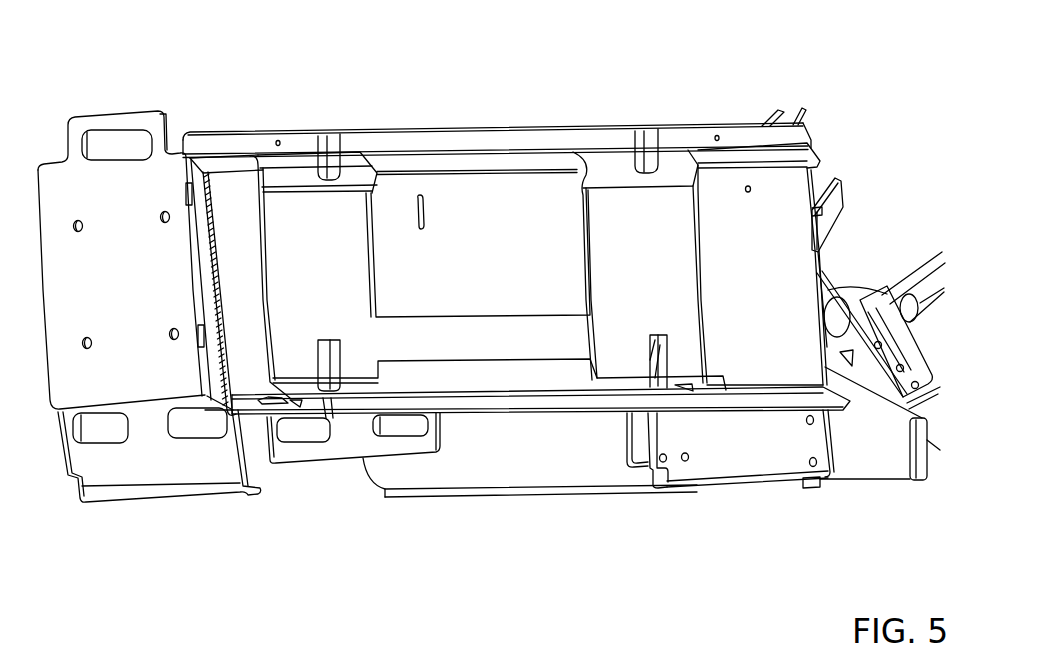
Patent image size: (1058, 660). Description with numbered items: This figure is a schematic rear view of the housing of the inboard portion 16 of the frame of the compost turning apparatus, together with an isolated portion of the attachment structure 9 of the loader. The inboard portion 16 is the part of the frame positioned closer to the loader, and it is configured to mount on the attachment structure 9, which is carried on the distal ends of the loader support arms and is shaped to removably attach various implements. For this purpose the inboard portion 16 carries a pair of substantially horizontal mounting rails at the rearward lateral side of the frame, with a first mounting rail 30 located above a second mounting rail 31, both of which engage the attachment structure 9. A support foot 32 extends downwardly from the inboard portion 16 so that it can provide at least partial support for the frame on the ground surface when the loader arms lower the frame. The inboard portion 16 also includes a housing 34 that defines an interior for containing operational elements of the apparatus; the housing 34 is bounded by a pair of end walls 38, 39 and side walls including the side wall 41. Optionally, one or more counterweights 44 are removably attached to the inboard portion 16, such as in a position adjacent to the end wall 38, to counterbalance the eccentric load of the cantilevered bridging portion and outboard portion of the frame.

The attachment structure 9 is at (663, 216).
The inboard portion 16 is at (785, 77).
The first mounting rail 30 is at (788, 153).
The second mounting rail 31 is at (767, 400).
The support foot 32 is at (183, 465).
The housing 34 is at (527, 108).
The end wall 38 is at (210, 210).
The end wall 39 is at (806, 177).
The side wall 41 is at (771, 269).
The counterweight 44 is at (65, 337).